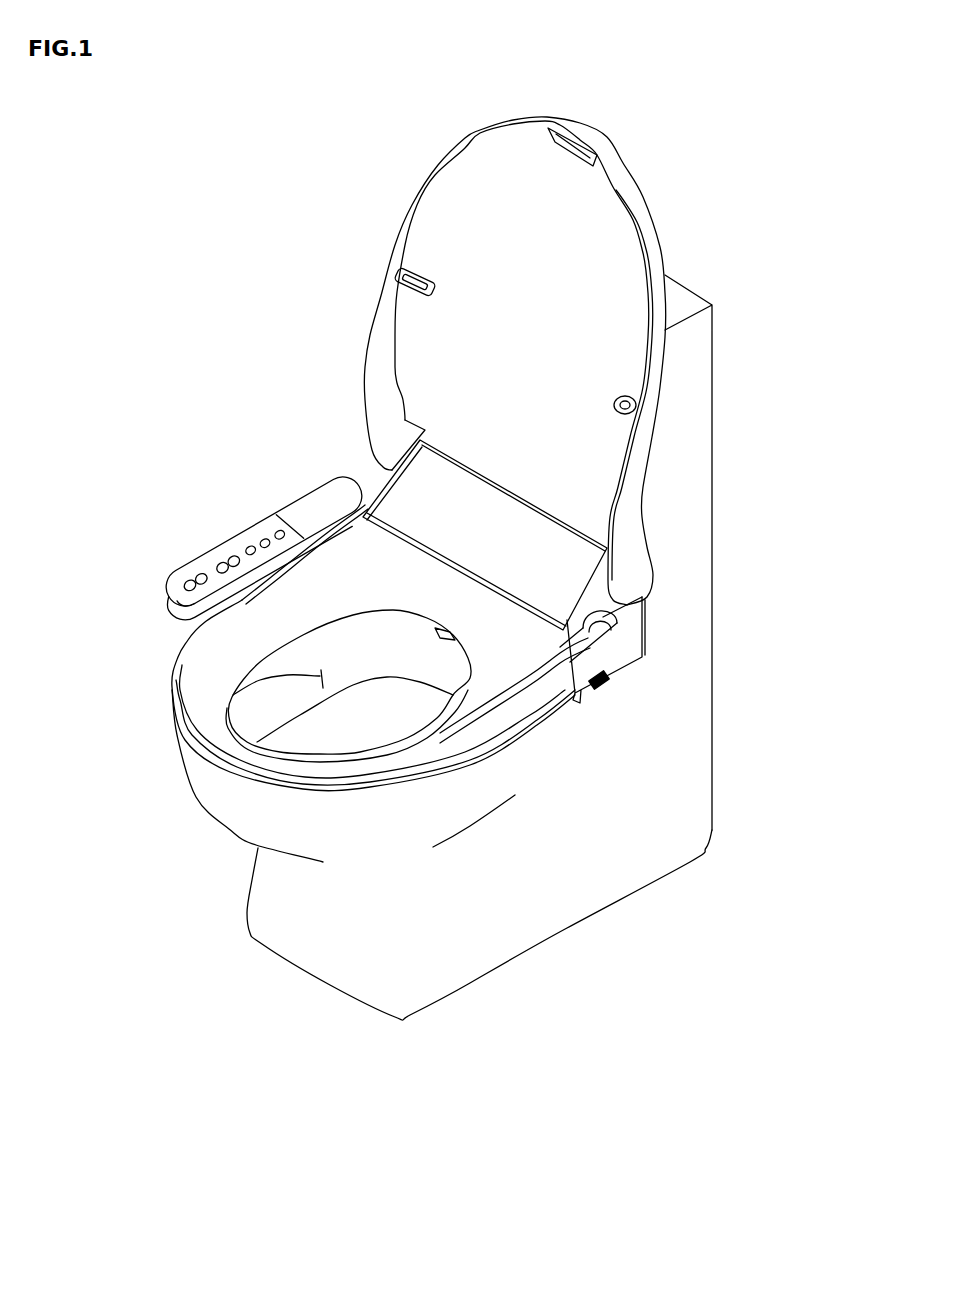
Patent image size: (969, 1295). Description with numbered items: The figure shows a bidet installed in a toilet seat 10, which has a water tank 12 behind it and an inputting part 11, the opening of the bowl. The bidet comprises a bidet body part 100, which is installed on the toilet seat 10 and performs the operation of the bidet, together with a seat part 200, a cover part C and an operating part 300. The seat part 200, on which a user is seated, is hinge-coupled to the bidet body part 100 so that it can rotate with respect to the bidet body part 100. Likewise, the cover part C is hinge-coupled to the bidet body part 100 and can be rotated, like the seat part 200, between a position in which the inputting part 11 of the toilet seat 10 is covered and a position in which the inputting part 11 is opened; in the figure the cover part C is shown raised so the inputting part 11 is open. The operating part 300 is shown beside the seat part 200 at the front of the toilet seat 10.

The toilet seat 10 is at (205, 785).
The inputting part 11 is at (185, 718).
The water tank 12 is at (698, 457).
The bidet body part 100 is at (633, 638).
The seat part 200 is at (207, 663).
The operating part 300 is at (225, 553).
The cover part C is at (623, 184).